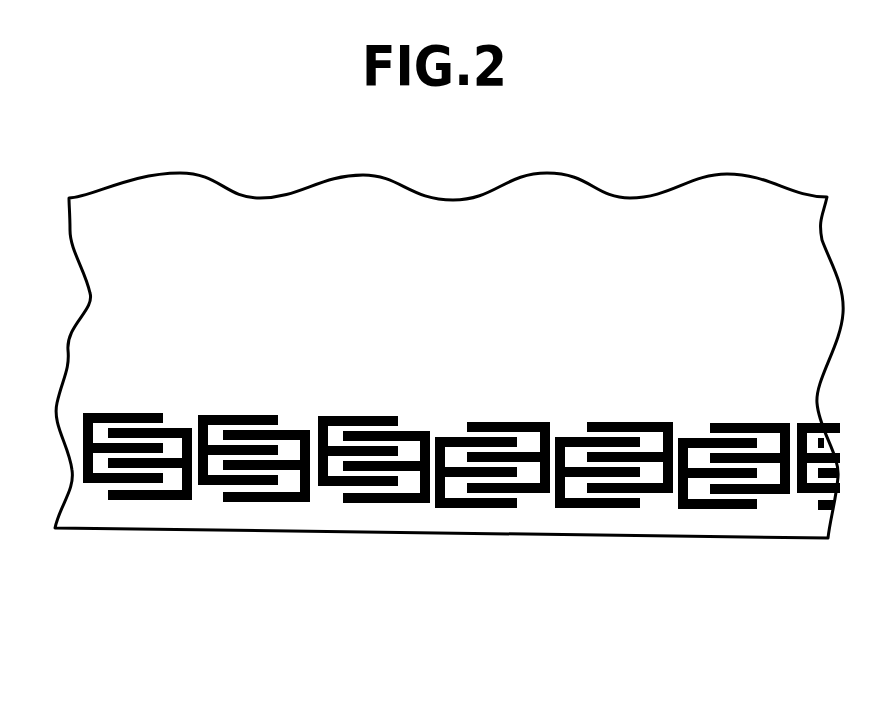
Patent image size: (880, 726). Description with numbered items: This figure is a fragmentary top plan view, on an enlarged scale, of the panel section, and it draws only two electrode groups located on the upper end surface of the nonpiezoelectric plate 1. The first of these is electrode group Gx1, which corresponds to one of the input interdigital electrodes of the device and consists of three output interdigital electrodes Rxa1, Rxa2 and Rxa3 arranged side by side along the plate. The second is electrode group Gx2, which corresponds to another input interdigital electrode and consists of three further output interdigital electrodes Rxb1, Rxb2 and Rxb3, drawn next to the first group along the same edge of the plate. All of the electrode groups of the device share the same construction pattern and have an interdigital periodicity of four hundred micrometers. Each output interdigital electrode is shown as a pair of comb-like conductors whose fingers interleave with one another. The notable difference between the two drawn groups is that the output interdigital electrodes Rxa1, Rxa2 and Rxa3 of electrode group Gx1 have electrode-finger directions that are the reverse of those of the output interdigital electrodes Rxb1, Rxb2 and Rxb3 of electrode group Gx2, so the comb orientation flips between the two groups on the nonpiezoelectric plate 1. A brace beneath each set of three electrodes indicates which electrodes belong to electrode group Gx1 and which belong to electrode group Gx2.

The nonpiezoelectric plate 1 is at (641, 217).
The output interdigital electrode Rxa1 is at (137, 500).
The output interdigital electrode Rxa2 is at (262, 502).
The output interdigital electrode Rxa3 is at (374, 515).
The output interdigital electrode Rxb1 is at (488, 505).
The output interdigital electrode Rxb2 is at (605, 505).
The output interdigital electrode Rxb3 is at (734, 522).
The electrode group Gx1 is at (256, 554).
The electrode group Gx2 is at (612, 561).